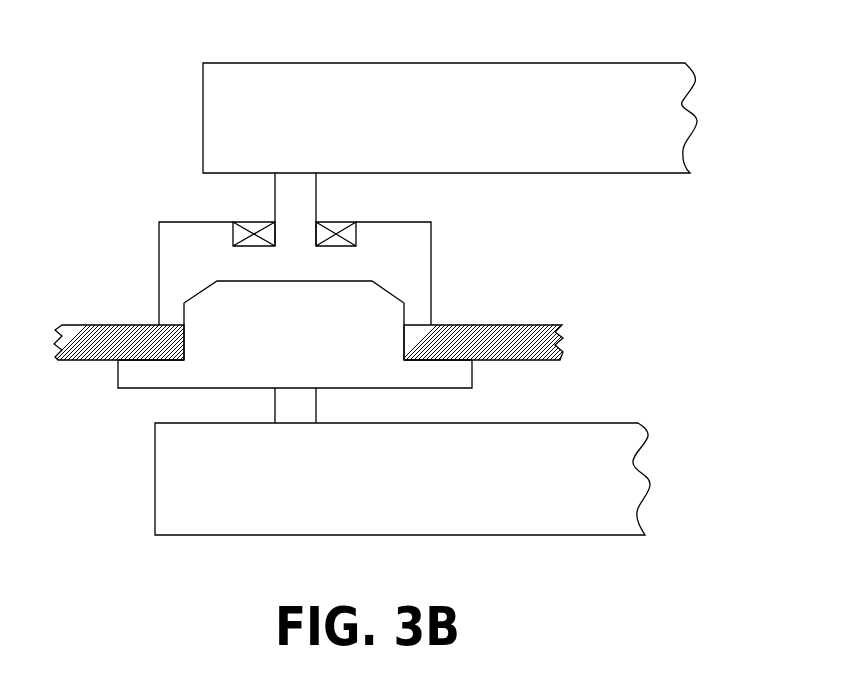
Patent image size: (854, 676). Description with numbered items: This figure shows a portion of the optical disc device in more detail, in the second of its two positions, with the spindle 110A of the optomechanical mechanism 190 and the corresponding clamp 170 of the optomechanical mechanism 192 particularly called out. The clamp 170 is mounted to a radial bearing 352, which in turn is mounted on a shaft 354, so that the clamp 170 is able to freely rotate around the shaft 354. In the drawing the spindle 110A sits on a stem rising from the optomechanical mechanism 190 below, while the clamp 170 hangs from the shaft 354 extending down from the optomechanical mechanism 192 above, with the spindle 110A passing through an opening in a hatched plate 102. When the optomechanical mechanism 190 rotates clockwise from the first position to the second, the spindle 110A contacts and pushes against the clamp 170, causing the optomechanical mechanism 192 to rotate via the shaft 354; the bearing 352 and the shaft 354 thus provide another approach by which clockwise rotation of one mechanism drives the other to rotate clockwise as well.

The optomechanical mechanism 192 is at (365, 135).
The optomechanical mechanism 190 is at (462, 502).
The shaft 354 is at (317, 197).
The radial bearing 352 is at (251, 221).
The clamp 170 is at (408, 275).
The spindle 110A is at (320, 363).
The plate / substrate 102 is at (112, 325).